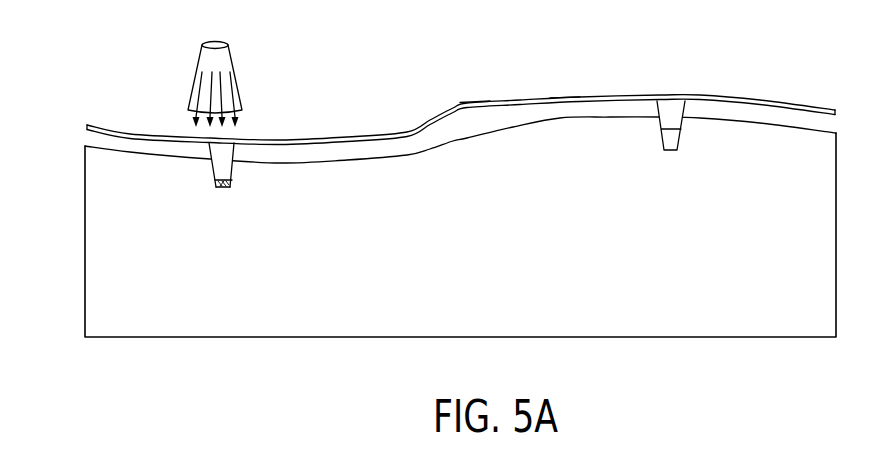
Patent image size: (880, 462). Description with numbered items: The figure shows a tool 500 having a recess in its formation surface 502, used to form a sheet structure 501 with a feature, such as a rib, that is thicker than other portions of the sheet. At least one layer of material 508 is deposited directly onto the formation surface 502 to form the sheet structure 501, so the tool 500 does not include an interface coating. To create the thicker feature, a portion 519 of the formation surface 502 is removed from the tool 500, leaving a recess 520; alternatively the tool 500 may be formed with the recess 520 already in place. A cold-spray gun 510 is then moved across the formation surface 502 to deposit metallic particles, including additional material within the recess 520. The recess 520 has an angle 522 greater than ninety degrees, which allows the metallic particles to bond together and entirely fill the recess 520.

The tool 500 is at (85, 240).
The sheet structure 501 is at (565, 97).
The formation surface 502 is at (92, 146).
The layer of material 508 is at (475, 103).
The cold-spray gun 510 is at (230, 57).
The portion of the formation surface 519 is at (226, 155).
The recess 520 is at (225, 187).
The angle 522 is at (233, 183).